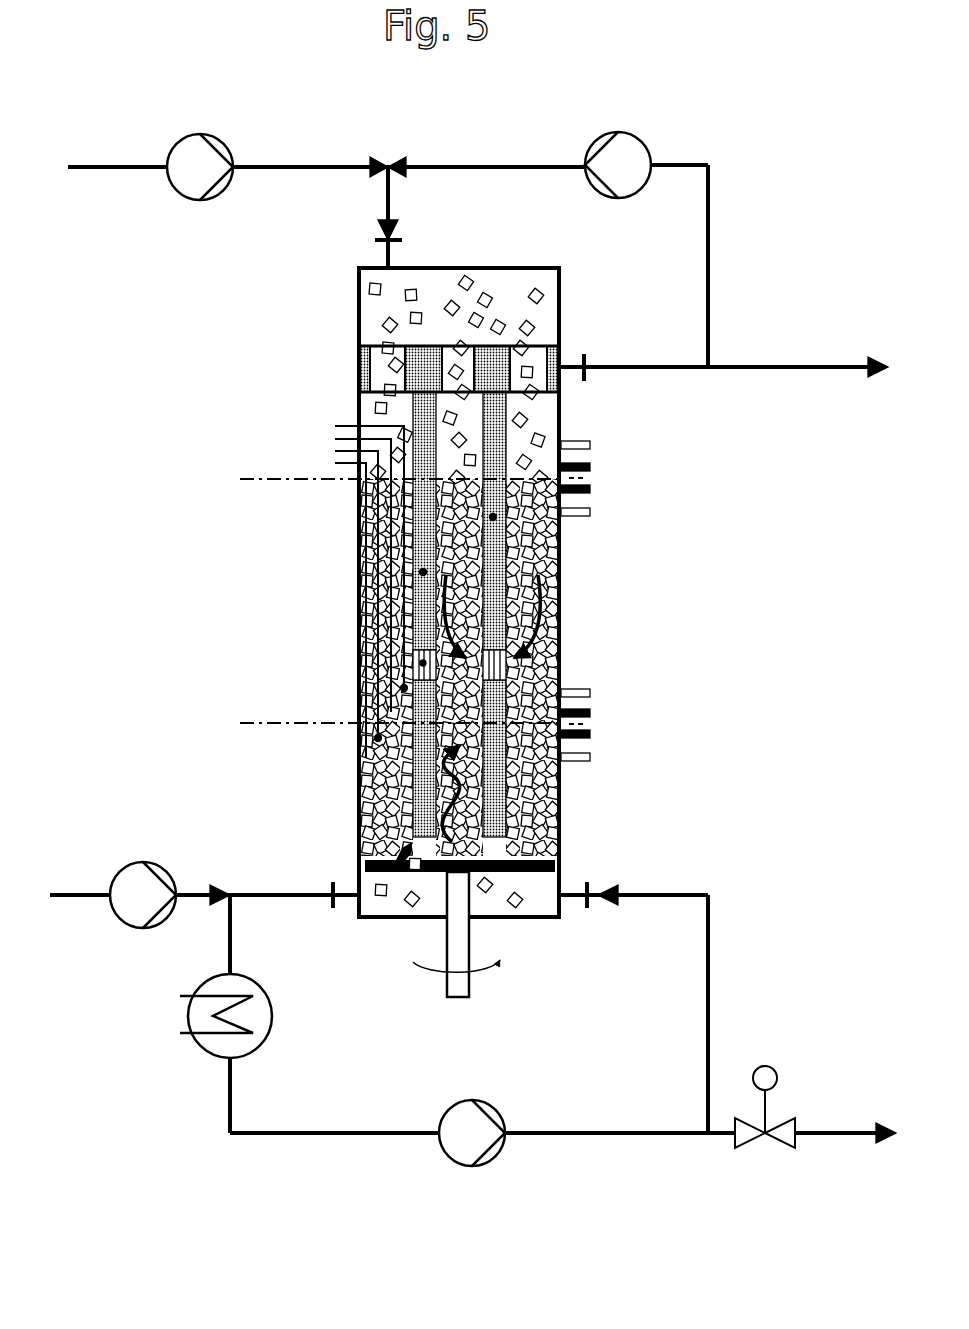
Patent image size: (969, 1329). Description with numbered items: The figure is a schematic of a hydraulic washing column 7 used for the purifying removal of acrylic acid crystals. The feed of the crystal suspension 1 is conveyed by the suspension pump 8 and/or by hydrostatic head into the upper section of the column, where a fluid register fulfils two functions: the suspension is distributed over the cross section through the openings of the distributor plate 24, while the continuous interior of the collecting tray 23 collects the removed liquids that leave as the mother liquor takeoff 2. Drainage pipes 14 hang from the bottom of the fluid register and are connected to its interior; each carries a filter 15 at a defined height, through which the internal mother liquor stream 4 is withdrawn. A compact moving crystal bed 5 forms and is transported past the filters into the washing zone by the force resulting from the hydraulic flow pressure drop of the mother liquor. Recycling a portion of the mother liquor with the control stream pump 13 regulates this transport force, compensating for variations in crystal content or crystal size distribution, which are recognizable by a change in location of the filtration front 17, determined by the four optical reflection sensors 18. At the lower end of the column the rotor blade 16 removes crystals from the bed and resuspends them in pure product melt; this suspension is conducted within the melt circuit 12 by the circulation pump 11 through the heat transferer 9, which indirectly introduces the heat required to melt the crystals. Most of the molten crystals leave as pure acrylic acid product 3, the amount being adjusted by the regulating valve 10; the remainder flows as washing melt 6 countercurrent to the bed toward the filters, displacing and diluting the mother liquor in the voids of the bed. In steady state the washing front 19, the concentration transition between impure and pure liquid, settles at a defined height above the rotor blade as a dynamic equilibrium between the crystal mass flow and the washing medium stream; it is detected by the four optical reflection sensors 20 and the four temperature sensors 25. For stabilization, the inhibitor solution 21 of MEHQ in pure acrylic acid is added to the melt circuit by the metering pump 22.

The feed of the crystal suspension 1 is at (327, 201).
The mother liquor takeoff 2 is at (724, 273).
The pure acrylic acid product 3 is at (845, 1116).
The internal mother liquor stream 4 is at (565, 630).
The moving crystal bed 5 is at (537, 549).
The washing melt 6 is at (565, 808).
The washing column 7 is at (565, 594).
The suspension pump 8 is at (188, 182).
The heat transferer for melting the crystals 9 is at (218, 985).
The regulating valve 10 is at (745, 1133).
The circulation pump of the melt circuit 11 is at (458, 1145).
The melt circuit 12 is at (708, 995).
The control stream pump 13 is at (622, 181).
The drainage pipe 14 is at (357, 580).
The filter 15 is at (404, 688).
The rotor blade 16 is at (365, 860).
The filtration front 17 is at (376, 480).
The detection of the filtration front 18 is at (590, 445).
The washing front 19 is at (376, 723).
The detection of the washing front 20 is at (590, 693).
The inhibitor solution 21 is at (203, 885).
The metering pump for the inhibitor solution 22 is at (135, 911).
The fluid register collecting tray 23 is at (405, 375).
The fluid register distributor plate 24 is at (385, 364).
The detection of the washing front 25 is at (357, 740).